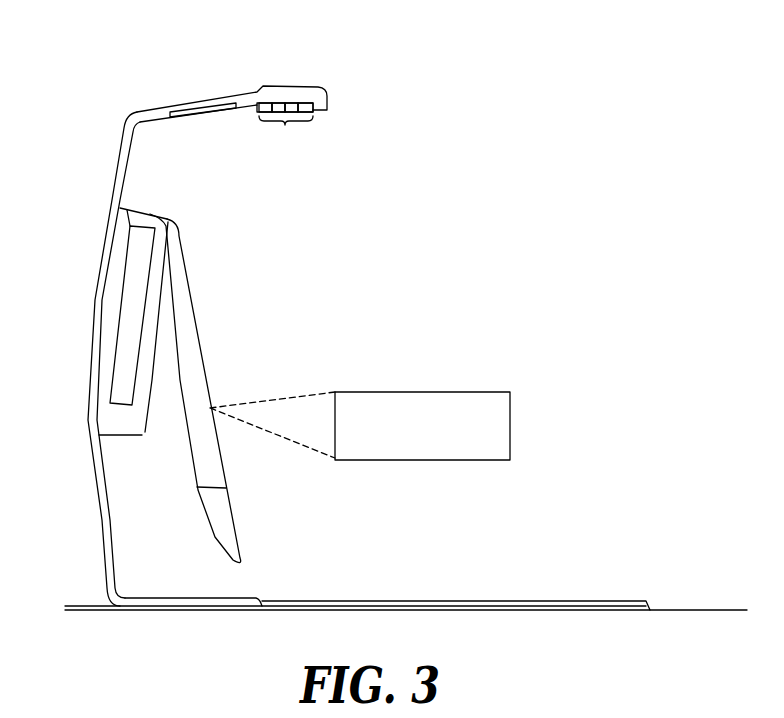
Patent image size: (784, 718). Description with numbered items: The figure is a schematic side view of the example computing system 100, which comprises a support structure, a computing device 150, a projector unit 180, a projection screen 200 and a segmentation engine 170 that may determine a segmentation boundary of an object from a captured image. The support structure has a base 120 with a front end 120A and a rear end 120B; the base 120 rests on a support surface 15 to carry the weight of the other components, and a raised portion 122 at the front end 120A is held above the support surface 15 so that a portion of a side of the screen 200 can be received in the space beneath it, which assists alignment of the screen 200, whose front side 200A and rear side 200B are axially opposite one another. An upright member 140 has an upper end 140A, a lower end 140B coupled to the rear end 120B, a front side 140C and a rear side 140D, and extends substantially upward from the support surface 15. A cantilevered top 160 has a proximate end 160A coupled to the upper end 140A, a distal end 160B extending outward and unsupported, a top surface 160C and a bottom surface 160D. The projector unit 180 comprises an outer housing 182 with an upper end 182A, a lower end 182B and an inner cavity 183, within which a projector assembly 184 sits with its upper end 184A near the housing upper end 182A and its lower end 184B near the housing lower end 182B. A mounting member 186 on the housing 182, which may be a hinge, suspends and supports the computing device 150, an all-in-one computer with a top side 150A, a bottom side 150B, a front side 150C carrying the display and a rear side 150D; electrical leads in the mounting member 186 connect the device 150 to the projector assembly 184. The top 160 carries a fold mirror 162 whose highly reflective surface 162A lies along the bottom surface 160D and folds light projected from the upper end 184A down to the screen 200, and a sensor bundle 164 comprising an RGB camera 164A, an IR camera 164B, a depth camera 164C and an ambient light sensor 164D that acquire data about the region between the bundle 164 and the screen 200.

The support surface 15 is at (683, 608).
The computing system 100 is at (500, 190).
The base 120 is at (203, 597).
The front end 120A is at (268, 600).
The rear end 120B is at (123, 608).
The raised portion 122 is at (258, 602).
The upright member 140 is at (88, 410).
The upper end 140A is at (120, 122).
The lower end 140B is at (112, 598).
The front side 140C is at (110, 510).
The rear side 140D is at (97, 515).
The computing device 150 is at (205, 315).
The top side 150A is at (178, 231).
The bottom side 150B is at (245, 563).
The front side 150C is at (203, 377).
The rear side 150D is at (227, 487).
The top 160 is at (203, 63).
The proximate end 160A is at (133, 117).
The distal end 160B is at (336, 93).
The top surface 160C is at (180, 100).
The bottom surface 160D is at (162, 127).
The fold mirror 162 is at (183, 120).
The highly reflective surface 162A is at (228, 113).
The sensor bundle 164 is at (293, 88).
The RGB camera 164A is at (308, 103).
The IR camera 164B is at (294, 103).
The depth camera 164C is at (280, 103).
The ambient light sensor 164D is at (266, 103).
The segmentation engine 170 is at (420, 462).
The projector unit 180 is at (95, 347).
The outer housing 182 is at (104, 436).
The upper end 182A is at (125, 193).
The lower end 182B is at (130, 444).
The inner cavity 183 is at (117, 258).
The projector assembly 184 is at (105, 325).
The upper end 184A is at (120, 217).
The lower end 184B is at (146, 420).
The mounting member 186 is at (163, 253).
The projection screen 200 is at (613, 603).
The front side 200A is at (649, 611).
The rear side 200B is at (238, 608).